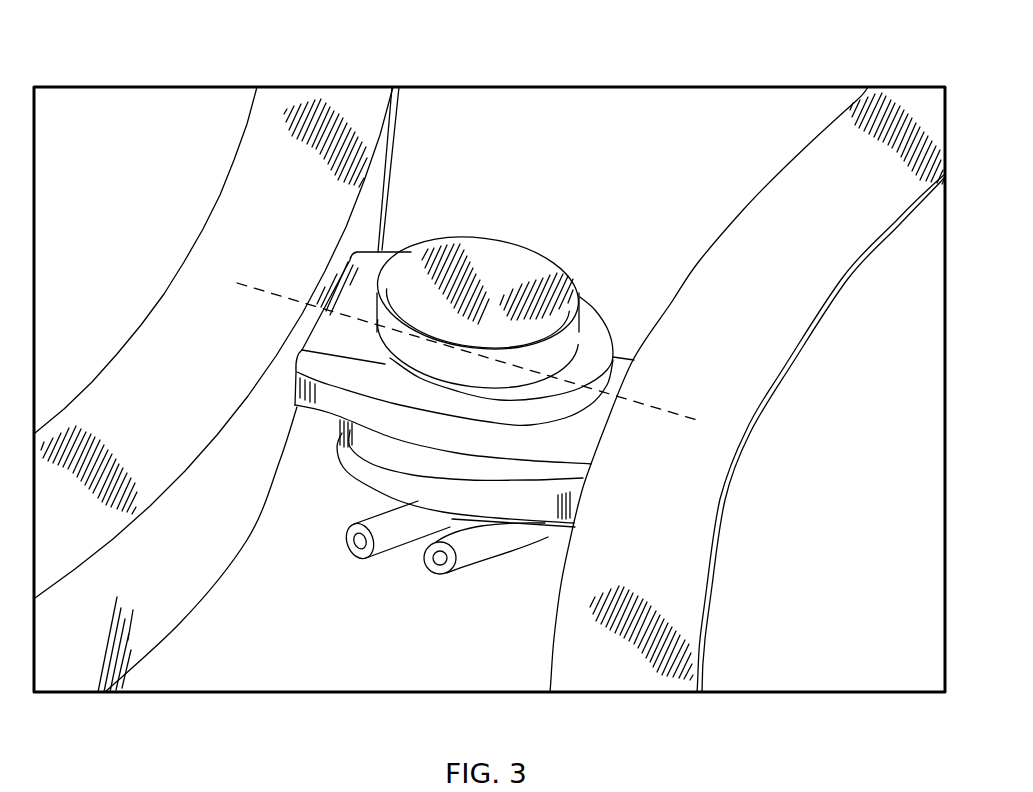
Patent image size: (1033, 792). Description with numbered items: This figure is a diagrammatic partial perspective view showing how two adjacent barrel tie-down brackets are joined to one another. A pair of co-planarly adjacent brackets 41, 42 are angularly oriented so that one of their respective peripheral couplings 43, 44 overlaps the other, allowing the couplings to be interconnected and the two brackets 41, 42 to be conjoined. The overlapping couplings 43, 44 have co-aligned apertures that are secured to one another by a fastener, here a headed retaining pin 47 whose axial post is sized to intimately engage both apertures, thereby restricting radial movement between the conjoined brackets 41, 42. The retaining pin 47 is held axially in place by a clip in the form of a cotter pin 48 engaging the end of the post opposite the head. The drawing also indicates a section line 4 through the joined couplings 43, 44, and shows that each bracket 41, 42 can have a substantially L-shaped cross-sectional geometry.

The bracket 41 is at (305, 100).
The bracket 42 is at (900, 100).
The coupling 43 is at (350, 288).
The coupling 44 is at (580, 492).
The headed retaining pin 47 is at (478, 238).
The cotter pin 48 is at (461, 536).
The section line 4- 4 is at (674, 422).